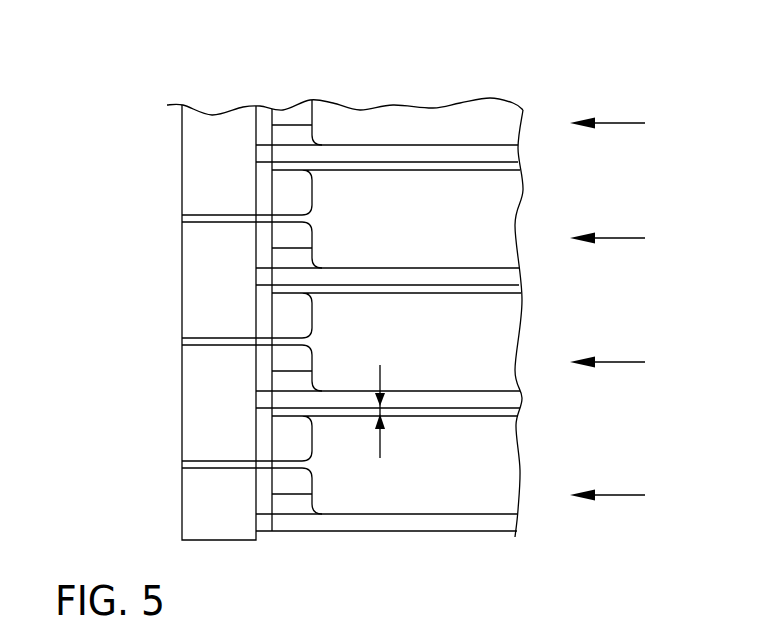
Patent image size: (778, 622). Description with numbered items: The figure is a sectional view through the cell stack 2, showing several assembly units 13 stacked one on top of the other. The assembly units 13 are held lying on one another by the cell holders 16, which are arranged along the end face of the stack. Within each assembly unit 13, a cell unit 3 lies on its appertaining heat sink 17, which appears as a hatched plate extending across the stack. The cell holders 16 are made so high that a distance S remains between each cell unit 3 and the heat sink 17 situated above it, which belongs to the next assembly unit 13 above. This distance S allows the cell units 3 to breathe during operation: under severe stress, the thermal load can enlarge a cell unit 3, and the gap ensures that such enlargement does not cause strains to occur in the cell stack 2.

The cell stack 2 is at (121, 75).
The cell unit 3 is at (503, 112).
The assembly unit 13 is at (627, 311).
The cell holder 16 is at (196, 165).
The heat sink 17 is at (503, 155).
The distance S is at (380, 373).